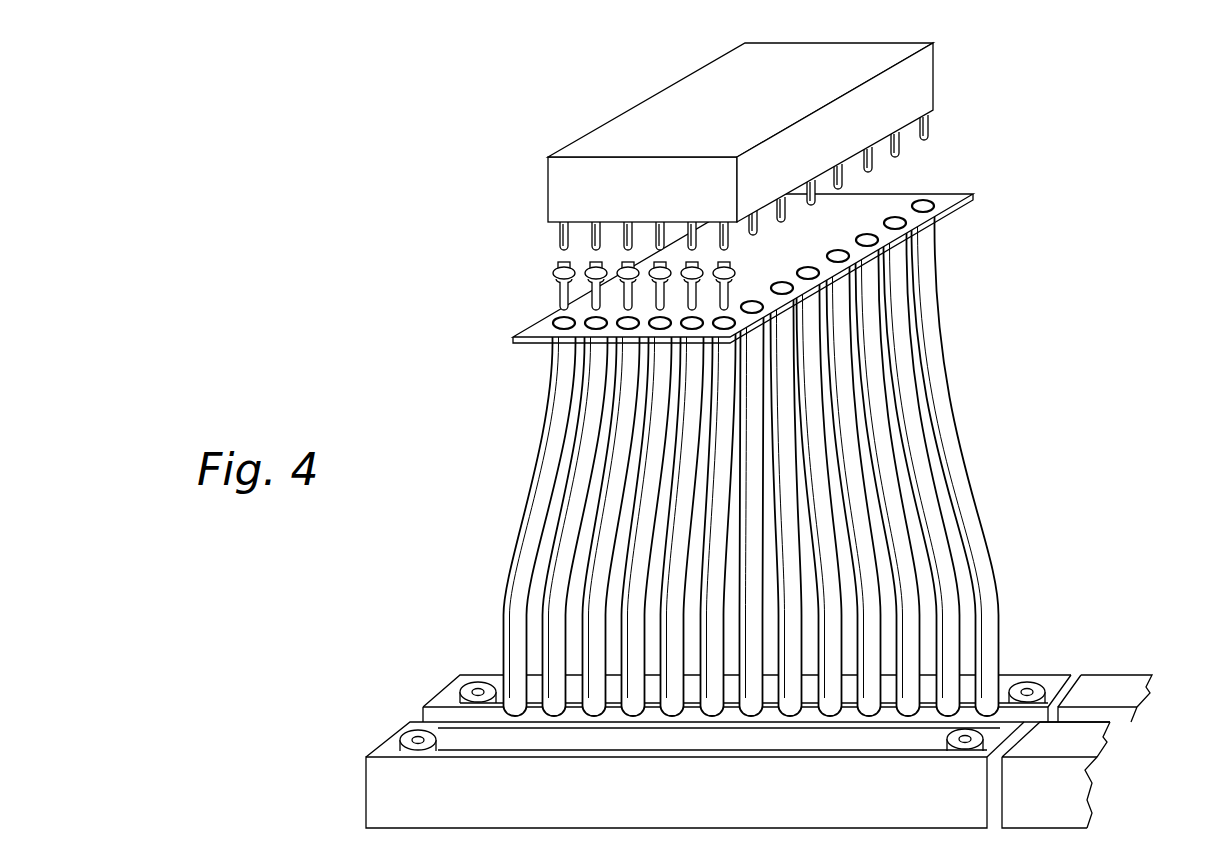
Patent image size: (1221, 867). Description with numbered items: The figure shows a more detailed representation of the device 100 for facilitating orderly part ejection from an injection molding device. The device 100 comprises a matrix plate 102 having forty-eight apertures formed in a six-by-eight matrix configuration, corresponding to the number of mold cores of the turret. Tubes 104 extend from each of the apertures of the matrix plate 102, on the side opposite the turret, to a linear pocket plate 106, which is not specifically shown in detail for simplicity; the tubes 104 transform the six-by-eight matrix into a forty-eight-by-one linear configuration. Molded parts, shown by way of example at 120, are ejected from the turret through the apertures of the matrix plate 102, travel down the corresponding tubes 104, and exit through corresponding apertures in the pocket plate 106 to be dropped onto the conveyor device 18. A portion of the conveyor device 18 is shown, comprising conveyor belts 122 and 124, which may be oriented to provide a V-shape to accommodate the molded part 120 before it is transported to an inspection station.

The device 100 is at (1062, 308).
The matrix plate 102 is at (959, 208).
The tubes 104 is at (677, 532).
The pocket plate 106 is at (1059, 677).
The conveyor device 18 is at (1115, 637).
The molded parts 120 is at (558, 290).
The conveyor belt 122 is at (497, 673).
The conveyor belt 124 is at (766, 747).